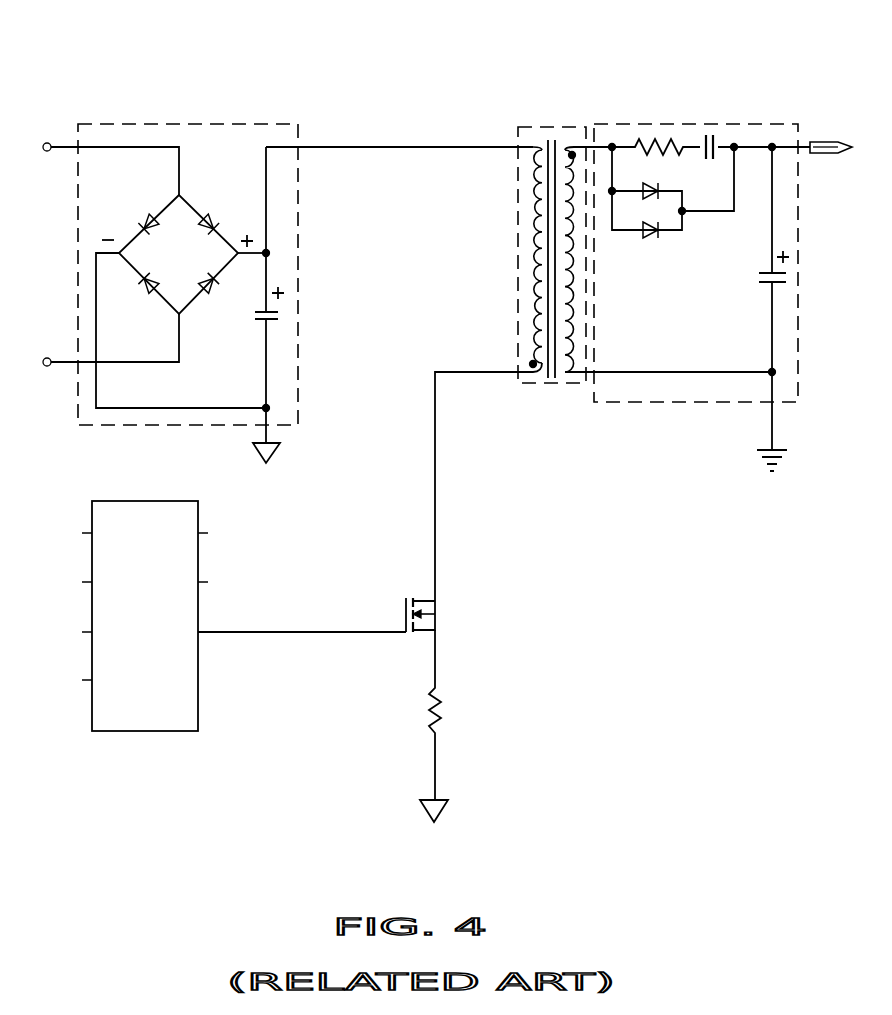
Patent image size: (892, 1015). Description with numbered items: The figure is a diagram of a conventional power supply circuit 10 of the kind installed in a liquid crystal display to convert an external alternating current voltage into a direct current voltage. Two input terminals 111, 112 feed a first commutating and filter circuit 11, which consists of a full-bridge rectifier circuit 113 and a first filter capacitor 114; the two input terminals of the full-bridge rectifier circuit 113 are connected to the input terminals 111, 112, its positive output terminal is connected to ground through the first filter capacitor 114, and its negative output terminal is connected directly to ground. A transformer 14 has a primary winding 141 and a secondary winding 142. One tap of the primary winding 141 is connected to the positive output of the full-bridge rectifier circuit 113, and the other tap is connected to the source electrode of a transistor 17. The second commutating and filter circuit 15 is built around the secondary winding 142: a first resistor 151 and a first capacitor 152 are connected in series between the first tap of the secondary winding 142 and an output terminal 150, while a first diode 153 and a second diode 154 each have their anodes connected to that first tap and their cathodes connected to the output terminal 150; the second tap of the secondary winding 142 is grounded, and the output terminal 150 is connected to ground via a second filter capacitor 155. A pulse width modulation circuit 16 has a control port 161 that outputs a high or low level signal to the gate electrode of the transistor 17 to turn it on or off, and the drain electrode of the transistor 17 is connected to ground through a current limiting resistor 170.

The power supply circuit 10 is at (363, 78).
The first commutating and filter circuit 11 is at (260, 124).
The input terminal 111 is at (47, 143).
The input terminal 112 is at (47, 358).
The full-bridge rectifier circuit 113 is at (183, 228).
The first filter capacitor 114 is at (282, 317).
The transformer 14 is at (538, 127).
The primary winding 141 is at (533, 347).
The secondary winding 142 is at (570, 347).
The second commutating and filter circuit 15 is at (662, 124).
The output terminal 150 is at (820, 140).
The first resistor 151 is at (648, 137).
The first capacitor 152 is at (708, 130).
The first diode 153 is at (650, 178).
The second diode 154 is at (652, 245).
The second filter capacitor 155 is at (788, 292).
The pulse width modulation circuit 16 is at (139, 733).
The control port 161 is at (200, 628).
The transistor 17 is at (438, 610).
The current limiting resistor 170 is at (438, 715).